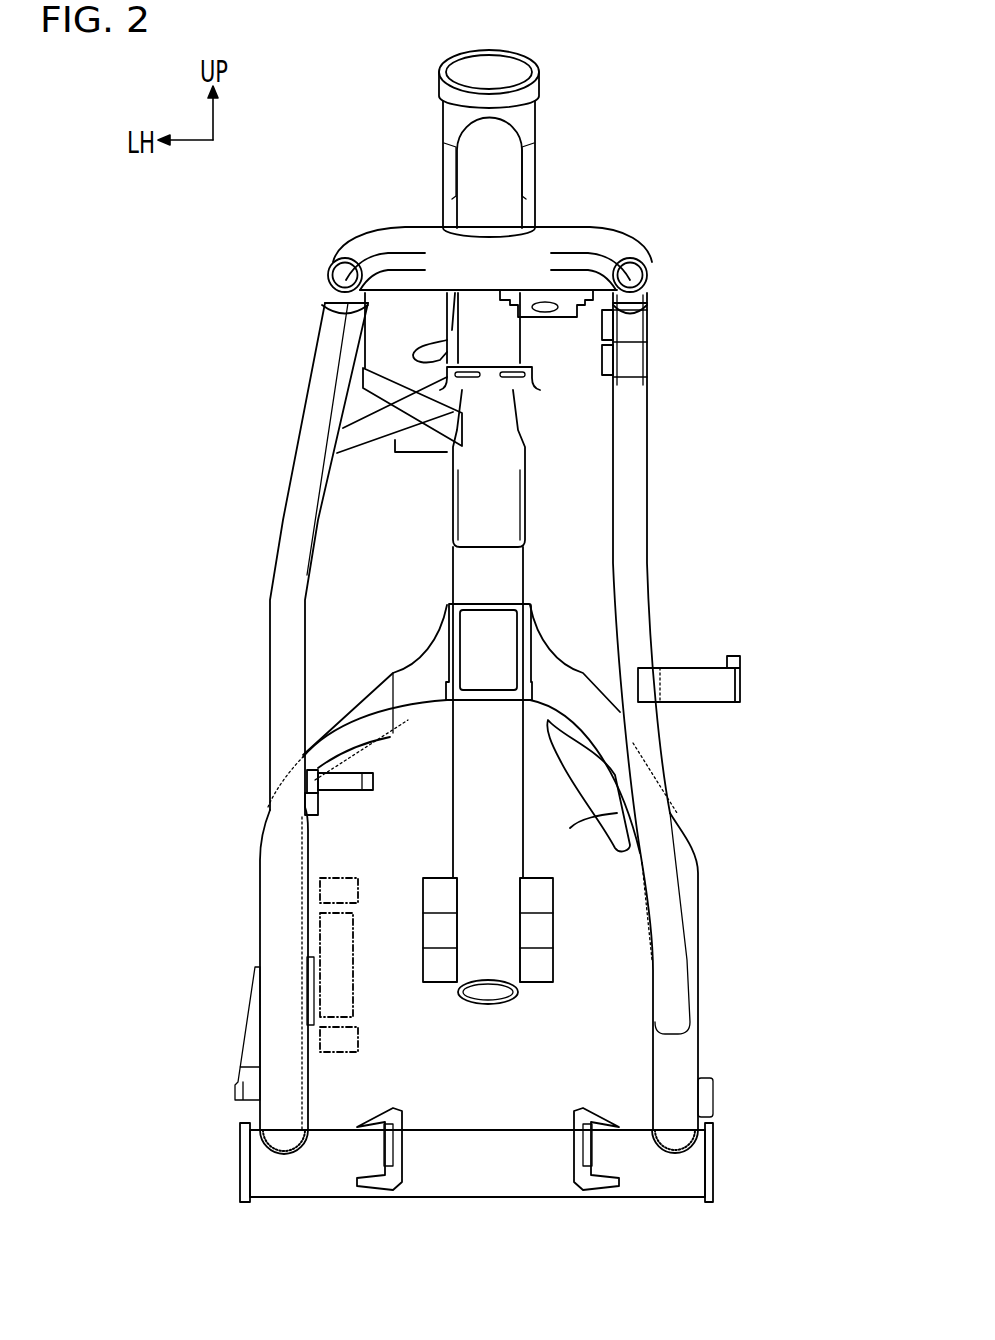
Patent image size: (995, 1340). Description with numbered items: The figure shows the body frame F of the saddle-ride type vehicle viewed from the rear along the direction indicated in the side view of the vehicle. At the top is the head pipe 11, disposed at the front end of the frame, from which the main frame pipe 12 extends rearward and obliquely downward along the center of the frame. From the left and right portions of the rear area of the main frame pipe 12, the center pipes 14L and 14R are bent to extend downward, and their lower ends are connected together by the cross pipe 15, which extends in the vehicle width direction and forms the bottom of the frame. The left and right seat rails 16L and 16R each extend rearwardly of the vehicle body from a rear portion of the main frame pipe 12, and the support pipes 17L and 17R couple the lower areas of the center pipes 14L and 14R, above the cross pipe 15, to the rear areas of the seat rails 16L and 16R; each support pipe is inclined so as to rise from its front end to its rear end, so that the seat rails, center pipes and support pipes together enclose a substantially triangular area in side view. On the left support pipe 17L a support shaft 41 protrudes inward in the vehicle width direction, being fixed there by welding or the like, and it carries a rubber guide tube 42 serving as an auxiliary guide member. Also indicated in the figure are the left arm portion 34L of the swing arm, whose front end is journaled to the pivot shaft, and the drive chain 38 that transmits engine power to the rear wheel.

The head pipe 11 is at (535, 124).
The main frame pipe 12 is at (510, 500).
The left center pipe 14L is at (260, 923).
The right center pipe 14R is at (693, 887).
The cross pipe 15 is at (498, 1183).
The left seat rail 16L is at (330, 268).
The right seat rail 16R is at (650, 268).
The left support pipe 17L is at (285, 592).
The right support pipe 17R is at (637, 566).
The left arm portion 34L is at (353, 999).
The drive chain 38 is at (358, 890).
The support shaft 41 is at (375, 779).
The rubber guide tube 42 is at (347, 793).
The body frame F is at (647, 208).